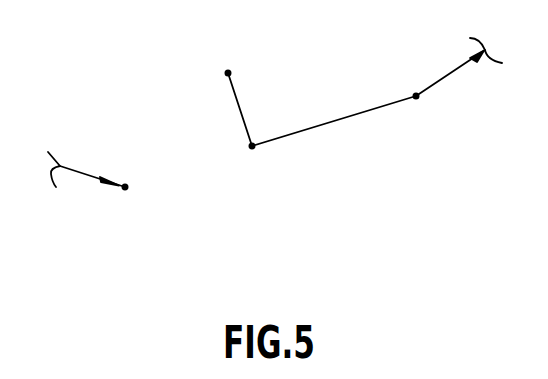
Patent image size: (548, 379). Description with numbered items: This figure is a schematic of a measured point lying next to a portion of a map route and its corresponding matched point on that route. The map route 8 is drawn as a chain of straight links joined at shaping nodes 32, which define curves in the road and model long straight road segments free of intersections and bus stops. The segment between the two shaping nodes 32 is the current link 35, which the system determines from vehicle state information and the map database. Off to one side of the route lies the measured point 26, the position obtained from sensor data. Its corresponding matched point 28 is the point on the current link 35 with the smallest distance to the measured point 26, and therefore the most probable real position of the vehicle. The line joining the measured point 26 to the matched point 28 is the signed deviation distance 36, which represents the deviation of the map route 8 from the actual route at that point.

The map route 8 is at (443, 78).
The measured point 26 is at (228, 72).
The matched point 28 is at (252, 146).
The shaping node 32 is at (125, 187).
The current link 35 is at (316, 127).
The deviation distance 36 is at (238, 102).